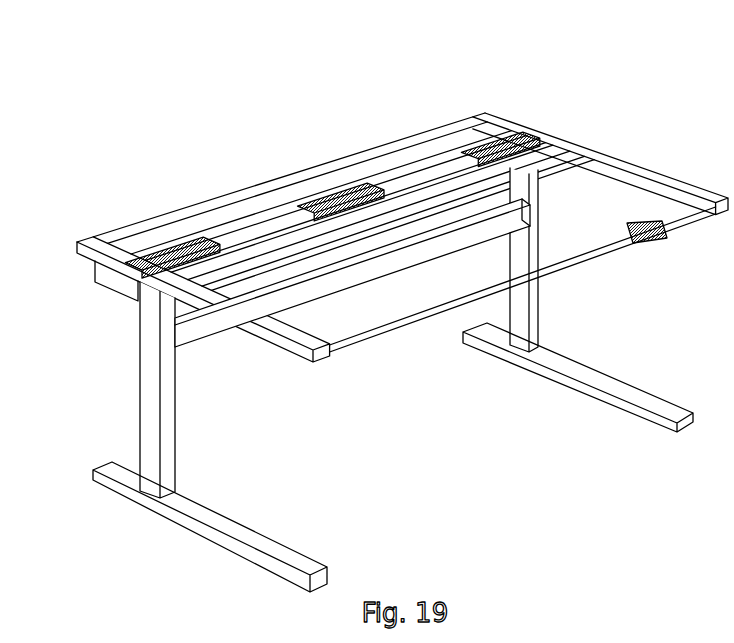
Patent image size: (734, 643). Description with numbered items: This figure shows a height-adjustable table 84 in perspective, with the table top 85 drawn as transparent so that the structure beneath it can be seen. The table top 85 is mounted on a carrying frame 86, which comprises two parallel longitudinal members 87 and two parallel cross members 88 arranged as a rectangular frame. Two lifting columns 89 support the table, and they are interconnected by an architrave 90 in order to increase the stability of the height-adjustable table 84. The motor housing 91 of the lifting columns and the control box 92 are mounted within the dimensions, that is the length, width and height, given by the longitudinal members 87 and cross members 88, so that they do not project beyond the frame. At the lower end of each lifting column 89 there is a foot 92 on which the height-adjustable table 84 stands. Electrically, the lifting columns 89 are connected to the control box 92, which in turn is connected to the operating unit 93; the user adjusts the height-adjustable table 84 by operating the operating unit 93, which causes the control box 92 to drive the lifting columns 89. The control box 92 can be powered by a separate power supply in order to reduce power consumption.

The height-adjustable table 84 is at (213, 67).
The table top 85 is at (438, 127).
The carrying frame 86 is at (84, 268).
The longitudinal members 87 is at (262, 254).
The cross members 88 is at (627, 176).
The lifting columns 89 is at (548, 298).
The architrave 90 is at (192, 334).
The motor housing 91 is at (165, 260).
The control box / foot 92 is at (335, 195).
The operating unit 93 is at (668, 236).